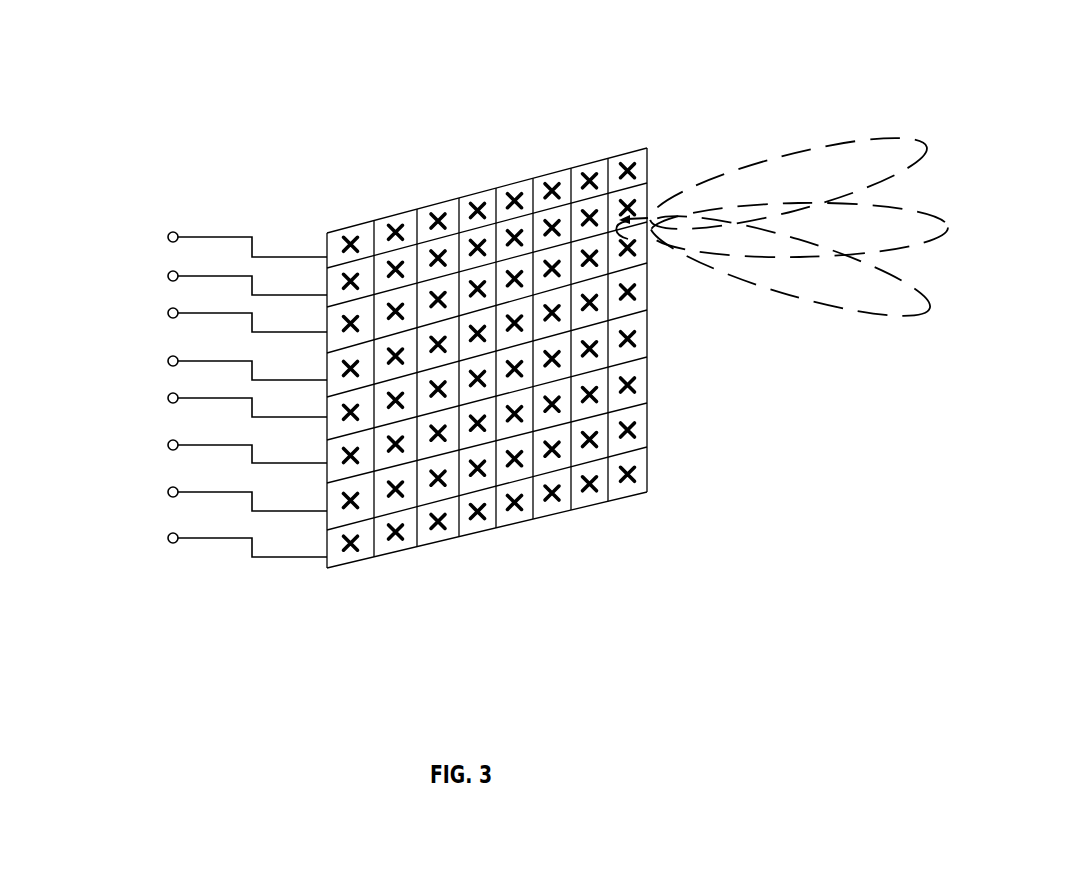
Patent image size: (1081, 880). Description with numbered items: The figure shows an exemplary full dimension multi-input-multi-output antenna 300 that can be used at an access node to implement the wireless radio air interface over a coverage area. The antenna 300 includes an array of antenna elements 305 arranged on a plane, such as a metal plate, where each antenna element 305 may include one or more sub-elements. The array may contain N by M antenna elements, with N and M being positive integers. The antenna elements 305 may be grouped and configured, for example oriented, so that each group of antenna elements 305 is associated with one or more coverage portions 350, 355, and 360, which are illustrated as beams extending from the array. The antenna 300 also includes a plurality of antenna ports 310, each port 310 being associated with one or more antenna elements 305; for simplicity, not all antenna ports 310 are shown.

The full dimension multi-input-multi-output antenna 300 is at (494, 105).
The antenna element 305 is at (360, 235).
The antenna port 310 is at (168, 237).
The coverage portion 350 is at (863, 140).
The coverage portion 355 is at (910, 213).
The coverage portion 360 is at (928, 303).